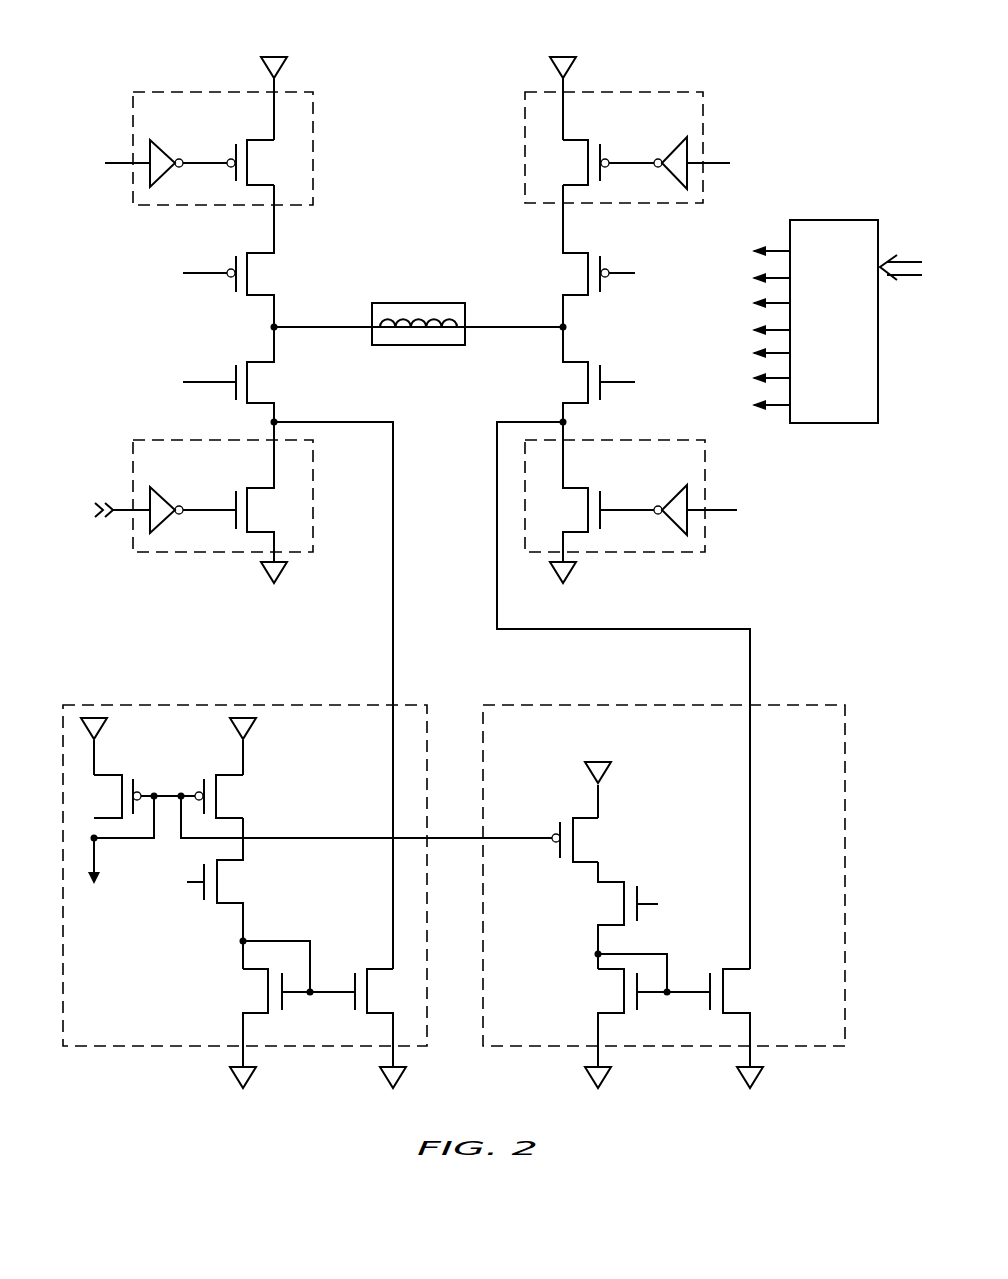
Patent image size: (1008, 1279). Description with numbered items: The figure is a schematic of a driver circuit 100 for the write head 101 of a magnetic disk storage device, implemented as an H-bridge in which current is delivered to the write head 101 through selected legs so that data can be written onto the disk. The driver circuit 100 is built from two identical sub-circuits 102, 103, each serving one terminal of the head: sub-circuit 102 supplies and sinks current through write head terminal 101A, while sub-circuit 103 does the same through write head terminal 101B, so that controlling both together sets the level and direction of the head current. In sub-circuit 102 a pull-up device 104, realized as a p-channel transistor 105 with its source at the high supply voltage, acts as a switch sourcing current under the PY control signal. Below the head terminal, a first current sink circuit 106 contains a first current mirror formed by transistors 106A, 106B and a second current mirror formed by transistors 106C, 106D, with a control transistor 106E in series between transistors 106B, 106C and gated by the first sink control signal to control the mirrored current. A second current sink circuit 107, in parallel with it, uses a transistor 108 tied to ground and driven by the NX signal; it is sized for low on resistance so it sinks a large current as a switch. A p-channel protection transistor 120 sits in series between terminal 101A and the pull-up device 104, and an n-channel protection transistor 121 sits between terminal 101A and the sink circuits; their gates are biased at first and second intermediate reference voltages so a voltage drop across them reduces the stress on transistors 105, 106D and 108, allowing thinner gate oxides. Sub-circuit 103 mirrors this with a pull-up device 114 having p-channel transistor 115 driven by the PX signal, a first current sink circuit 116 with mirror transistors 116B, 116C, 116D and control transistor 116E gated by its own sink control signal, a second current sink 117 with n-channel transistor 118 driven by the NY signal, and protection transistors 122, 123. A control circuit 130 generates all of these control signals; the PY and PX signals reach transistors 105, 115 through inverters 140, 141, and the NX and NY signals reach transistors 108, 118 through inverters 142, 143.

The driver circuit 100 is at (471, 35).
The write head 101 is at (437, 345).
The write head terminal 101A is at (340, 327).
The write head terminal 101B is at (532, 327).
The sub-circuit 102 is at (100, 88).
The sub-circuit 103 is at (752, 87).
The pull-up device 104 is at (162, 92).
The p-channel transistor 105 is at (260, 138).
The first current sink circuit 106 is at (122, 1046).
The transistor 106A is at (109, 774).
The transistor 106B is at (227, 774).
The transistor 106C is at (253, 1015).
The transistor 106D is at (385, 968).
The control transistor 106E is at (232, 906).
The second current sink circuit 107 is at (162, 552).
The transistor 108 is at (262, 487).
The pull-up device 114 is at (675, 92).
The p-channel transistor 115 is at (578, 138).
The first current sink circuit 116 is at (783, 1047).
The transistor 116B is at (585, 817).
The transistor 116C is at (623, 1013).
The transistor 116D is at (742, 968).
The control transistor 116E is at (612, 882).
The second current sink circuit 117 is at (677, 552).
The n-channel transistor 118 is at (578, 487).
The p-channel protection transistor 120 is at (260, 250).
The n-channel protection transistor 121 is at (260, 362).
The p-channel protection transistor 122 is at (578, 250).
The n-channel protection transistor 123 is at (578, 360).
The control circuit 130 is at (818, 423).
The inverter 140 is at (155, 183).
The inverter 141 is at (680, 185).
The inverter 142 is at (155, 530).
The inverter 143 is at (680, 530).